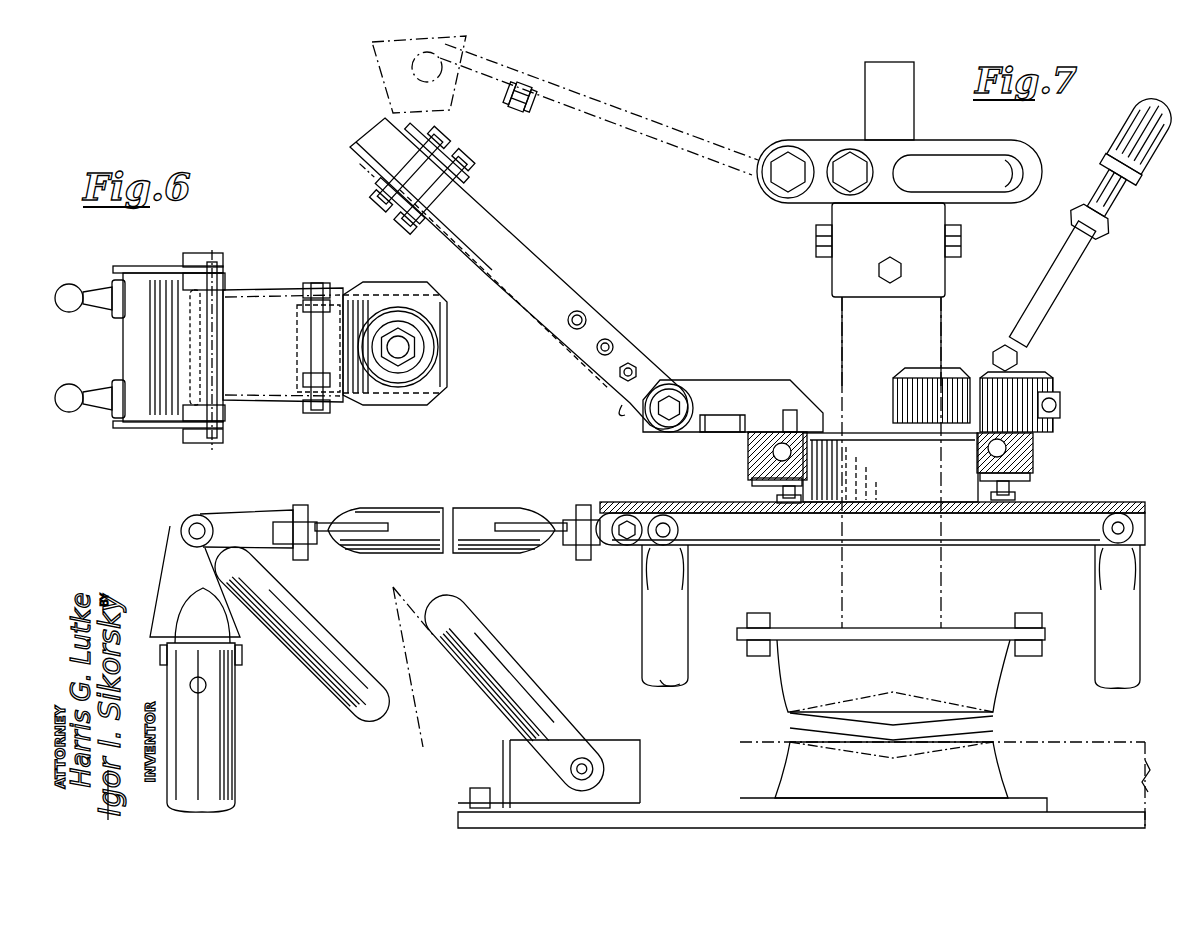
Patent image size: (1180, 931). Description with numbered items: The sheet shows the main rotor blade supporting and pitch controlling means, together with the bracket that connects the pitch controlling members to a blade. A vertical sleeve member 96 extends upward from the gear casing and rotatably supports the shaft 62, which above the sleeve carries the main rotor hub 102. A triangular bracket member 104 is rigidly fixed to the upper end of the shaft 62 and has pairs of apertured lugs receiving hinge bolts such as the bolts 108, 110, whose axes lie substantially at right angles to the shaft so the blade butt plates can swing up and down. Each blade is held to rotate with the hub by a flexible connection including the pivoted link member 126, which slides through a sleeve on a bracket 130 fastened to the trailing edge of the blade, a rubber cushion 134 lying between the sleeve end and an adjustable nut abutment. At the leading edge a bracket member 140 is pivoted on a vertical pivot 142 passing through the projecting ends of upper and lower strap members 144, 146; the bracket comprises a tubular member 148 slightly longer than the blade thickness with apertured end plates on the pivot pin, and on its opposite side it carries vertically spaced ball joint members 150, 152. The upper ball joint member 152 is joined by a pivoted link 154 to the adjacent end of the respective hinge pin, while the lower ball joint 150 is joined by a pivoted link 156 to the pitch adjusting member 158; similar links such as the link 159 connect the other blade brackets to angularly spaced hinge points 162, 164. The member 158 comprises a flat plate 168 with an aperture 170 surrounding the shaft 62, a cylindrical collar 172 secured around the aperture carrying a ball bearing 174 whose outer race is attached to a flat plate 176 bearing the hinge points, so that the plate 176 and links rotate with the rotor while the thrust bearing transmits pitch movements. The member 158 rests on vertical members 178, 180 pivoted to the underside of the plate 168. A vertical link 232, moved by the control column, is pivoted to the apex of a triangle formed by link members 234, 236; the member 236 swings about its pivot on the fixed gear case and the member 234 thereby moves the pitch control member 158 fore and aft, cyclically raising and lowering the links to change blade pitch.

In FIG. 7, the shaft 62 is at (942, 340).
In FIG. 7, the vertical sleeve member 96 is at (1003, 680).
In FIG. 7, the main rotor hub 102 is at (818, 140).
In FIG. 7, the triangular bracket member 104 is at (869, 188).
In FIG. 7, the hinge bolt 108 is at (828, 212).
In FIG. 7, the hinge bolt 110 is at (975, 195).
In FIG. 6, the pivoted link member 126 is at (396, 368).
In FIG. 6, the bracket 130 is at (405, 378).
In FIG. 6, the rubber cushion 134 is at (388, 364).
In FIG. 7, the bracket member 140 is at (450, 120).
In FIG. 6, the vertical pivot 142 is at (210, 446).
In FIG. 6, the strap member 144 is at (225, 290).
In FIG. 6, the strap member 146 is at (225, 415).
In FIG. 6, the tubular member 148 is at (123, 350).
In FIG. 6, the lower ball joint member 150 is at (72, 413).
In FIG. 7, the lower ball joint member 150 is at (433, 163).
In FIG. 6, the upper ball joint member 152 is at (72, 284).
In FIG. 7, the upper ball joint member 152 is at (412, 70).
In FIG. 7, the pivoted link 154 is at (592, 100).
In FIG. 7, the pivoted link 156 is at (560, 282).
In FIG. 7, the pitch adjusting member 158 is at (1065, 500).
In FIG. 7, the pivoted link 159 is at (1072, 293).
In FIG. 7, the hinge point 162 is at (736, 382).
In FIG. 7, the hinge point 164 is at (1058, 390).
In FIG. 7, the flat plate 168 is at (642, 510).
In FIG. 7, the aperture 170 is at (870, 524).
In FIG. 7, the cylindrical collar 172 is at (790, 480).
In FIG. 7, the ball bearing 174 is at (748, 462).
In FIG. 7, the flat plate 176 is at (772, 428).
In FIG. 7, the vertical member 178 is at (642, 638).
In FIG. 7, the vertical member 180 is at (1097, 600).
In FIG. 7, the vertical link 232 is at (236, 732).
In FIG. 7, the link member 234 is at (413, 508).
In FIG. 7, the link member 236 is at (335, 642).